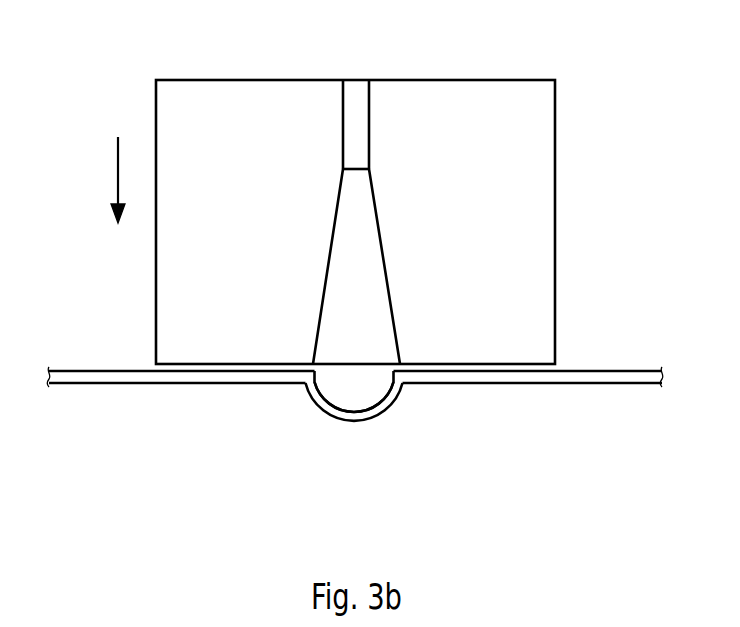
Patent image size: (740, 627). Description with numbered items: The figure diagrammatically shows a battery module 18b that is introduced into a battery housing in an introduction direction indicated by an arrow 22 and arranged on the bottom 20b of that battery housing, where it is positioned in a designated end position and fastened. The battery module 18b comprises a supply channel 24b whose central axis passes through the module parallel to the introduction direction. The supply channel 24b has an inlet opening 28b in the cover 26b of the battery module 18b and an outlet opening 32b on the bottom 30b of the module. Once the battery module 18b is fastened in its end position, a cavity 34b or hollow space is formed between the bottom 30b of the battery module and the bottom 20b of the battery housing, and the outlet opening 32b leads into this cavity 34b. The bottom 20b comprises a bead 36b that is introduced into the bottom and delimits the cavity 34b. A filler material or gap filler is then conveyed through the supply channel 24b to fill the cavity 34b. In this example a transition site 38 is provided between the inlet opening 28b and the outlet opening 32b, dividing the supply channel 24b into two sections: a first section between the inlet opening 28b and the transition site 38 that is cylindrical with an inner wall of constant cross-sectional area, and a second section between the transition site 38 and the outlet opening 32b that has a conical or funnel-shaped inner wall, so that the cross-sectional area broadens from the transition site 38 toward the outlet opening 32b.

The battery module 18b is at (419, 183).
The bottom of the battery housing 20b is at (361, 364).
The arrow indicating introduction direction 22 is at (118, 172).
The supply channel 24b is at (355, 222).
The cover of the battery module 26b is at (504, 79).
The inlet opening 28b is at (355, 79).
The bottom of the battery module 30b is at (503, 365).
The outlet opening 32b is at (353, 365).
The cavity 34b is at (370, 385).
The bead 36b is at (340, 416).
The transition site 38 is at (370, 169).